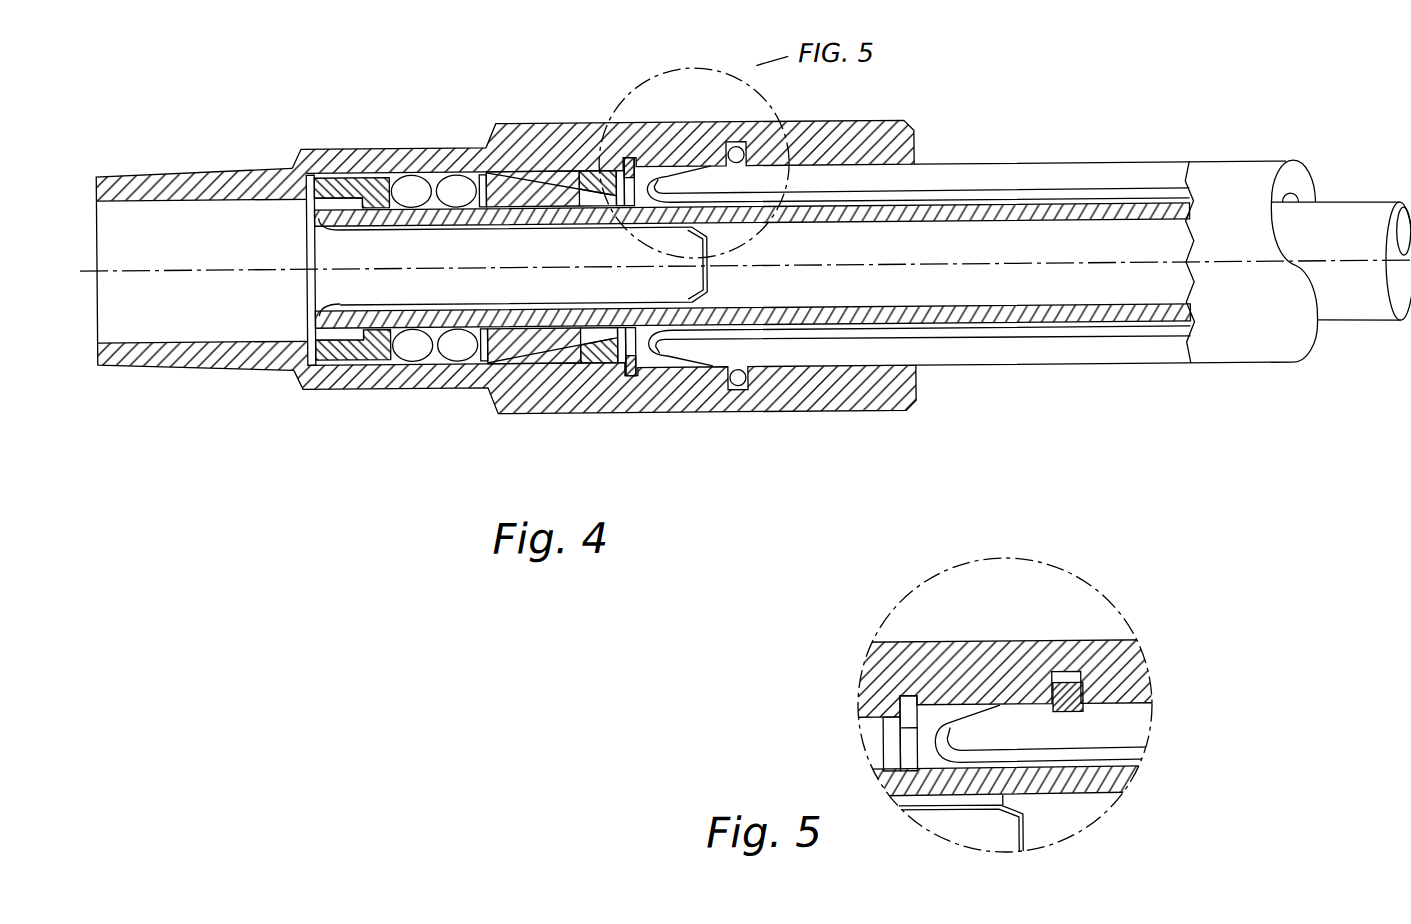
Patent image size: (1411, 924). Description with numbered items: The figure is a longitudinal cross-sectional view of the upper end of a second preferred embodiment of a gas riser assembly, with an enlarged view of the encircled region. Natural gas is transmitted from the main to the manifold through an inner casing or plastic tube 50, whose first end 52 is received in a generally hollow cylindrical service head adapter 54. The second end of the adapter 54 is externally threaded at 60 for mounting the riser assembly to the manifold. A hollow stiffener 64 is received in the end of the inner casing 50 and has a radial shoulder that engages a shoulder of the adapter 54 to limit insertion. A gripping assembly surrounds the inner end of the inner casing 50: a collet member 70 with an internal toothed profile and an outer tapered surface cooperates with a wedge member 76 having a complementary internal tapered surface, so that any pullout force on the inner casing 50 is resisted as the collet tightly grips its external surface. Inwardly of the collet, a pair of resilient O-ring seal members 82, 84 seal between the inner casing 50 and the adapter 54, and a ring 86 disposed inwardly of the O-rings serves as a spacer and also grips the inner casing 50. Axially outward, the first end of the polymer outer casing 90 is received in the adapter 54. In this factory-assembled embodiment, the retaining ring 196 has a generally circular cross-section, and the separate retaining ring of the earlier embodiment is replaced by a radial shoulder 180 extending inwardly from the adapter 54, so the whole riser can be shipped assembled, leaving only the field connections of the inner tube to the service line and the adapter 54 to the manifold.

The inner casing 50 is at (1352, 217).
The first end of the inner casing 52 is at (343, 224).
The adapter 54 is at (310, 387).
The external threads 60 is at (162, 176).
The hollow stiffener 64 is at (345, 285).
The collet member 70 is at (514, 170).
The wedge member 76 is at (590, 190).
The seal member 82 is at (457, 348).
The seal member 84 is at (410, 348).
The ring 86 is at (336, 188).
The outer casing 90 is at (1062, 172).
The radial shoulder 180 is at (633, 374).
The retaining ring 196 is at (744, 370).